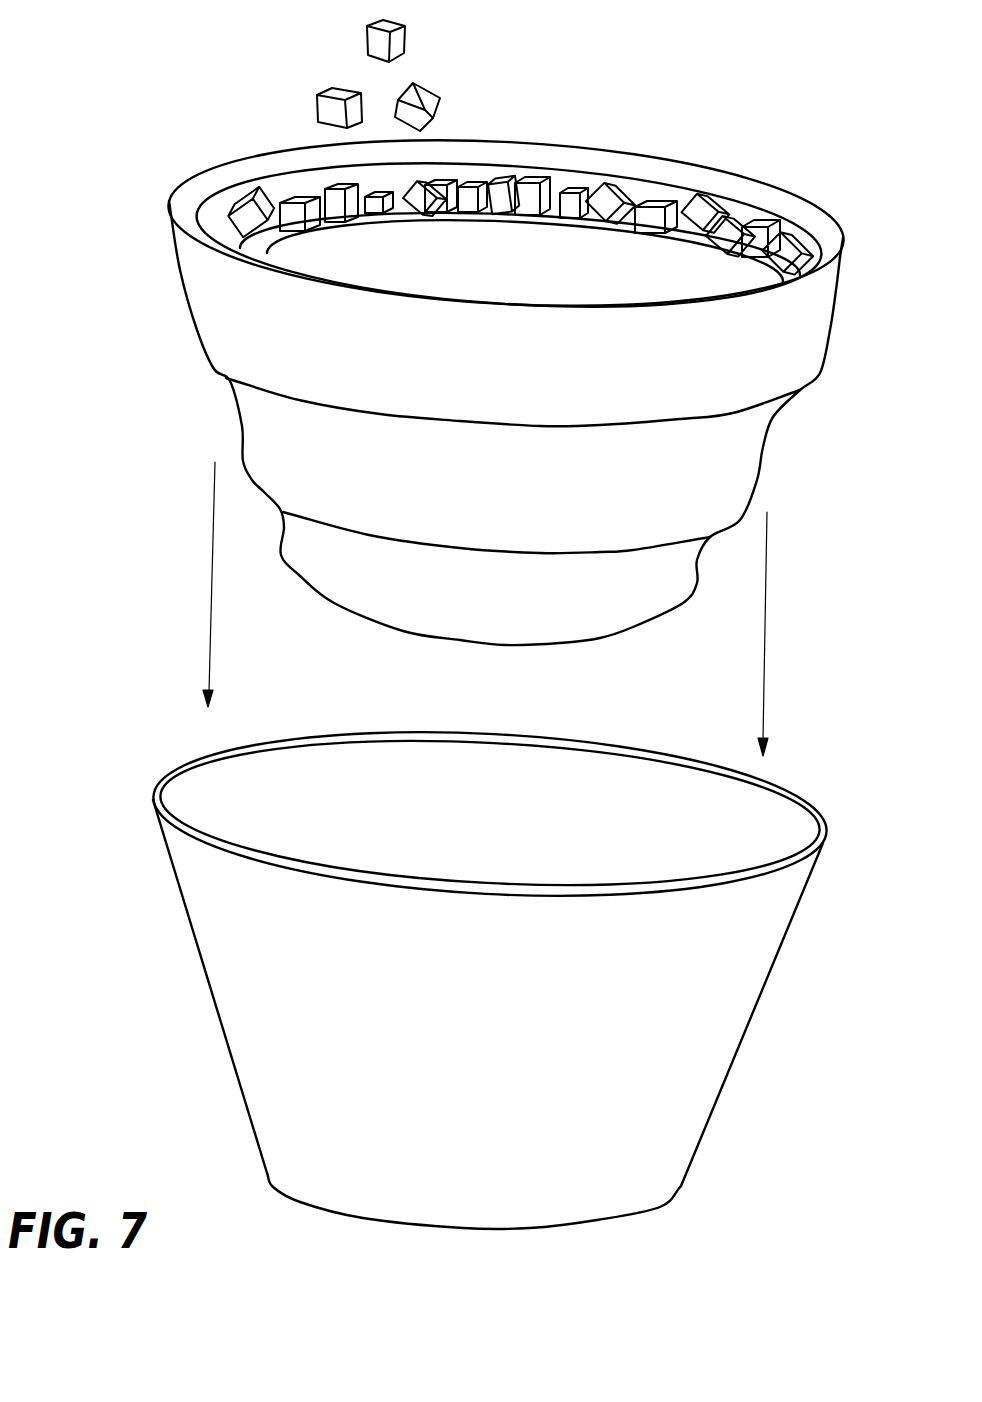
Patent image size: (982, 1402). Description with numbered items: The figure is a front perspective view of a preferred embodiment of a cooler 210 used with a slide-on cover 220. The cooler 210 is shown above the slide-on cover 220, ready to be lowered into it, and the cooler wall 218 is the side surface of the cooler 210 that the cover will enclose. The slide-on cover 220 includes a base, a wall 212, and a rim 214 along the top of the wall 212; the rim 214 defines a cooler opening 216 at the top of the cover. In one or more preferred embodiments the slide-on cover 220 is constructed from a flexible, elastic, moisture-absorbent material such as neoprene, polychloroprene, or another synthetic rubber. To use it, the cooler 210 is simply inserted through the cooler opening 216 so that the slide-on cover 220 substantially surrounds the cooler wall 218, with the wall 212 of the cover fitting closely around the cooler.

The cooler 210 is at (200, 140).
The wall 212 is at (225, 913).
The rim 214 is at (153, 797).
The cooler opening 216 is at (256, 788).
The cooler wall 218 is at (779, 352).
The slide-on cover 220 is at (190, 998).